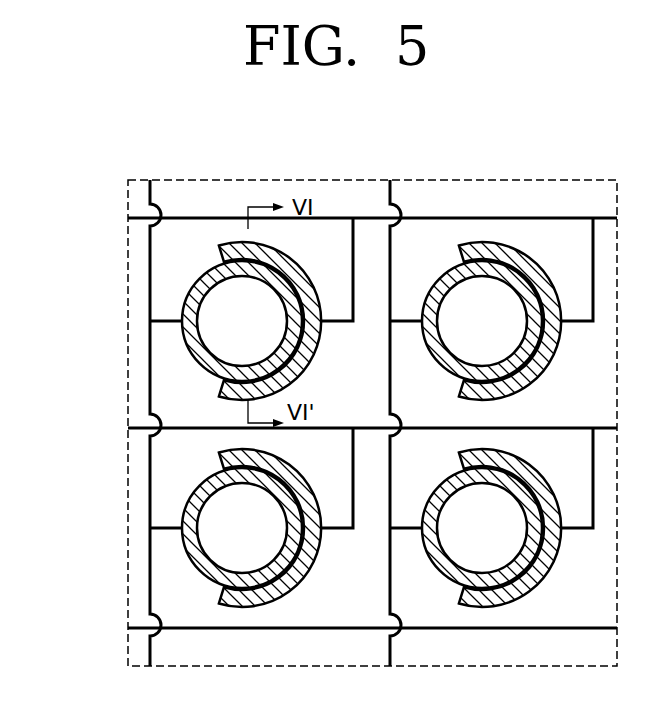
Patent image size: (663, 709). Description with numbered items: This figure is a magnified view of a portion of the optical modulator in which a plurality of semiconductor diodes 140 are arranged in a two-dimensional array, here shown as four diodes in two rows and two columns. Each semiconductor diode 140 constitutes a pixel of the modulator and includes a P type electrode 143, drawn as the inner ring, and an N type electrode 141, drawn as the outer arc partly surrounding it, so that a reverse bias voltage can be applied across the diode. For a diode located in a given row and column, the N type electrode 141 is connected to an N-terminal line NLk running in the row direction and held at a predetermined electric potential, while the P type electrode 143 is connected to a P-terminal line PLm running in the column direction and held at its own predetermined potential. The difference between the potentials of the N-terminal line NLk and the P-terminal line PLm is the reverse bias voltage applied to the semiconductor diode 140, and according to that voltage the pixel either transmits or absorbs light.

The semiconductor diode 140 is at (220, 262).
The N type electrode 141 is at (232, 246).
The P type electrode 143 is at (187, 300).
The P-terminal line PLm is at (160, 180).
The N-terminal line NLk is at (141, 219).